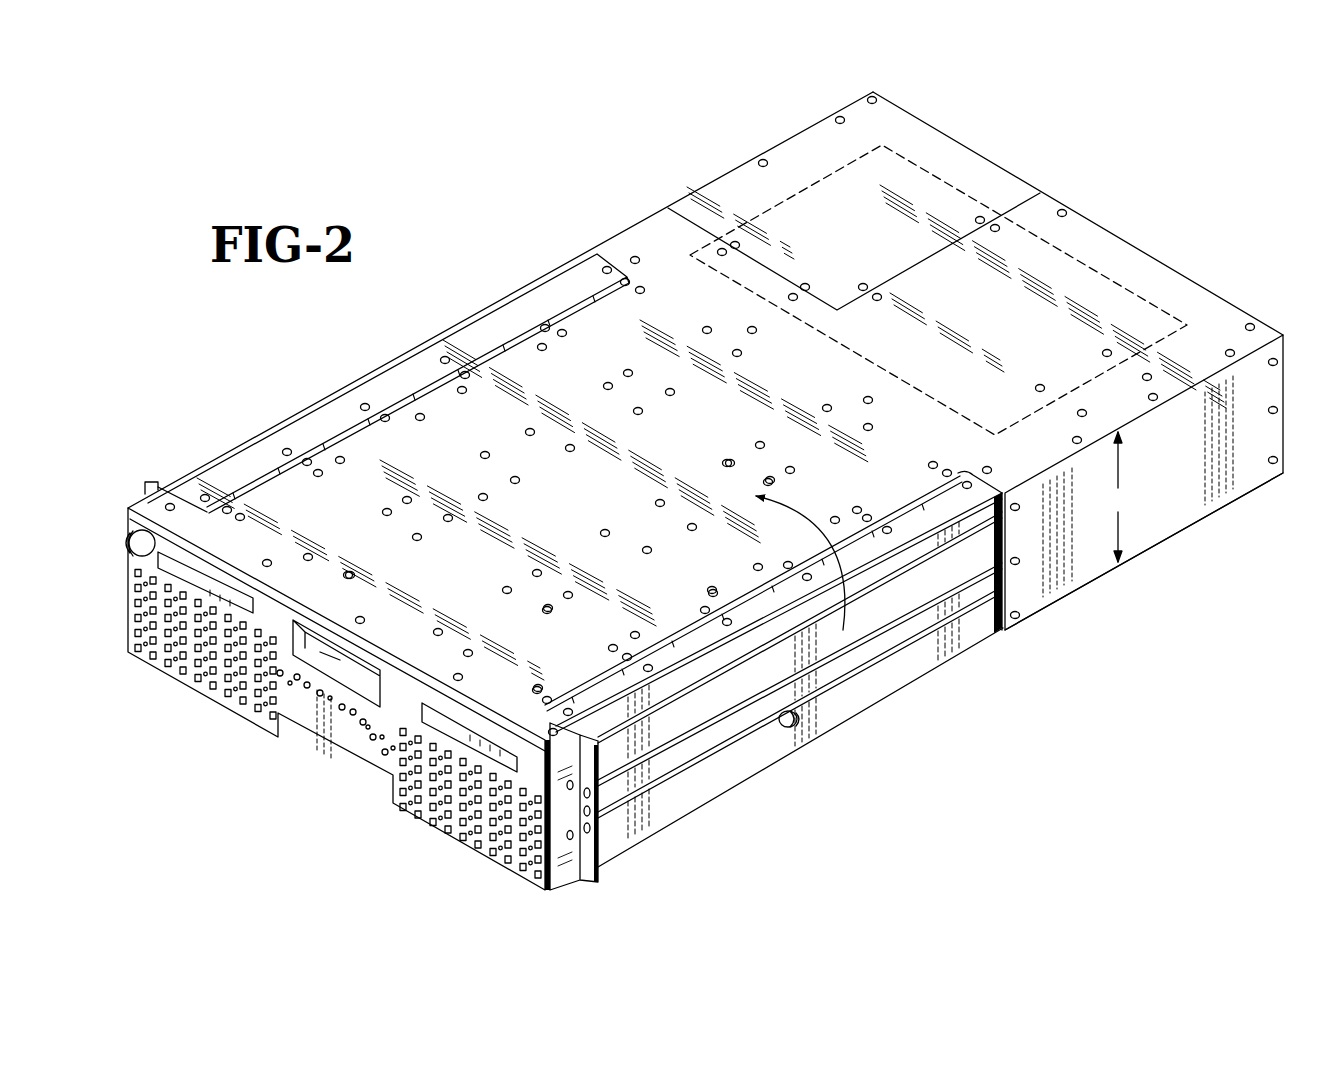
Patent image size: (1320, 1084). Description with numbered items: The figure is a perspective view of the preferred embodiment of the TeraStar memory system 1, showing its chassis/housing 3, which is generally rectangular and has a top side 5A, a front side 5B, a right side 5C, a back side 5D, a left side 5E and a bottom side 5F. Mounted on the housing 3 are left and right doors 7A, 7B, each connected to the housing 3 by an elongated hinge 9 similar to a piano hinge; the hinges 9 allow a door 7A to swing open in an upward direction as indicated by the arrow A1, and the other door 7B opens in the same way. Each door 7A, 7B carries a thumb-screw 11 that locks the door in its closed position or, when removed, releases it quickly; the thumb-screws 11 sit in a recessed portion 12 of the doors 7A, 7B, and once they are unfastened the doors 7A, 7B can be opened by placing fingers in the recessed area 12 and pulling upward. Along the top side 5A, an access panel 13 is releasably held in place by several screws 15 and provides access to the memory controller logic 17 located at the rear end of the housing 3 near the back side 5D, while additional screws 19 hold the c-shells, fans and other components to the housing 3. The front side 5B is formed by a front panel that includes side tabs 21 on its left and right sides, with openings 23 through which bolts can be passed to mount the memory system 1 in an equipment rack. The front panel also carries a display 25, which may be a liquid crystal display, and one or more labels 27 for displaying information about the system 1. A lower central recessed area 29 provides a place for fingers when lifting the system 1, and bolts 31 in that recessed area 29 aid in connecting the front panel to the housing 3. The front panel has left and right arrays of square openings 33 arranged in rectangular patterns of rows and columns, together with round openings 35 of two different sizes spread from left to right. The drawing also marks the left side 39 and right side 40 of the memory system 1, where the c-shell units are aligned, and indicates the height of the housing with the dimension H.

The TeraStar memory system 1 is at (687, 494).
The chassis/housing 3 is at (687, 485).
The top side 5A is at (705, 408).
The front side 5B is at (321, 699).
The right side 5C is at (1144, 506).
The back side 5D is at (1115, 233).
The left side 5E is at (606, 229).
The bottom side 5F is at (1034, 617).
The left door 7A is at (553, 482).
The right door 7B is at (557, 671).
The elongated hinges 9 is at (352, 432).
The thumb-screw 11 is at (798, 731).
The recessed portion 12 is at (886, 673).
The access panel 13 is at (793, 146).
The screws 15 is at (839, 116).
The memory controller logic 17 is at (930, 167).
The screws 19 is at (542, 344).
The side tabs 21 is at (412, 671).
The openings 23 is at (395, 693).
The display 25 is at (308, 636).
The labels 27 is at (190, 578).
The lower central recessed area 29 is at (313, 745).
The bolts 31 is at (297, 742).
The square openings 33 is at (229, 692).
The round openings 35 is at (373, 740).
The left side 39 is at (362, 352).
The right side 40 is at (769, 797).
The arrow A1 is at (800, 556).
The height H is at (1118, 497).